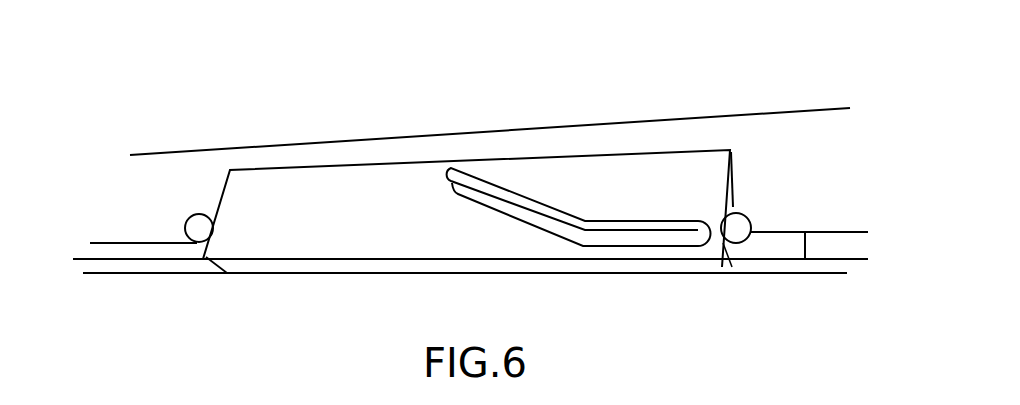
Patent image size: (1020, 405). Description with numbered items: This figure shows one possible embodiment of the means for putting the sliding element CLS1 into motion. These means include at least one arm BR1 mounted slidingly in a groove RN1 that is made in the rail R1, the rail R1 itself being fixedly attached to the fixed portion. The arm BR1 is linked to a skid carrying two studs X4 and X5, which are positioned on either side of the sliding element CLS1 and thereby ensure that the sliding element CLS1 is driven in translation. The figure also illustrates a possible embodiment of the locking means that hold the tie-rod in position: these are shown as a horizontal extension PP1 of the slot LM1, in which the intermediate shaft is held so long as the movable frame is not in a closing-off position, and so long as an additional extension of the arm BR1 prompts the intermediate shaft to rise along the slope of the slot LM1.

The rail R1 is at (408, 153).
The sliding element CLS1 is at (293, 196).
The arm BR1 is at (142, 250).
The slot LM1 is at (505, 193).
The horizontal extension PP1 is at (625, 230).
The stud X4 is at (200, 232).
The stud X5 is at (735, 228).
The groove RN1 is at (838, 243).